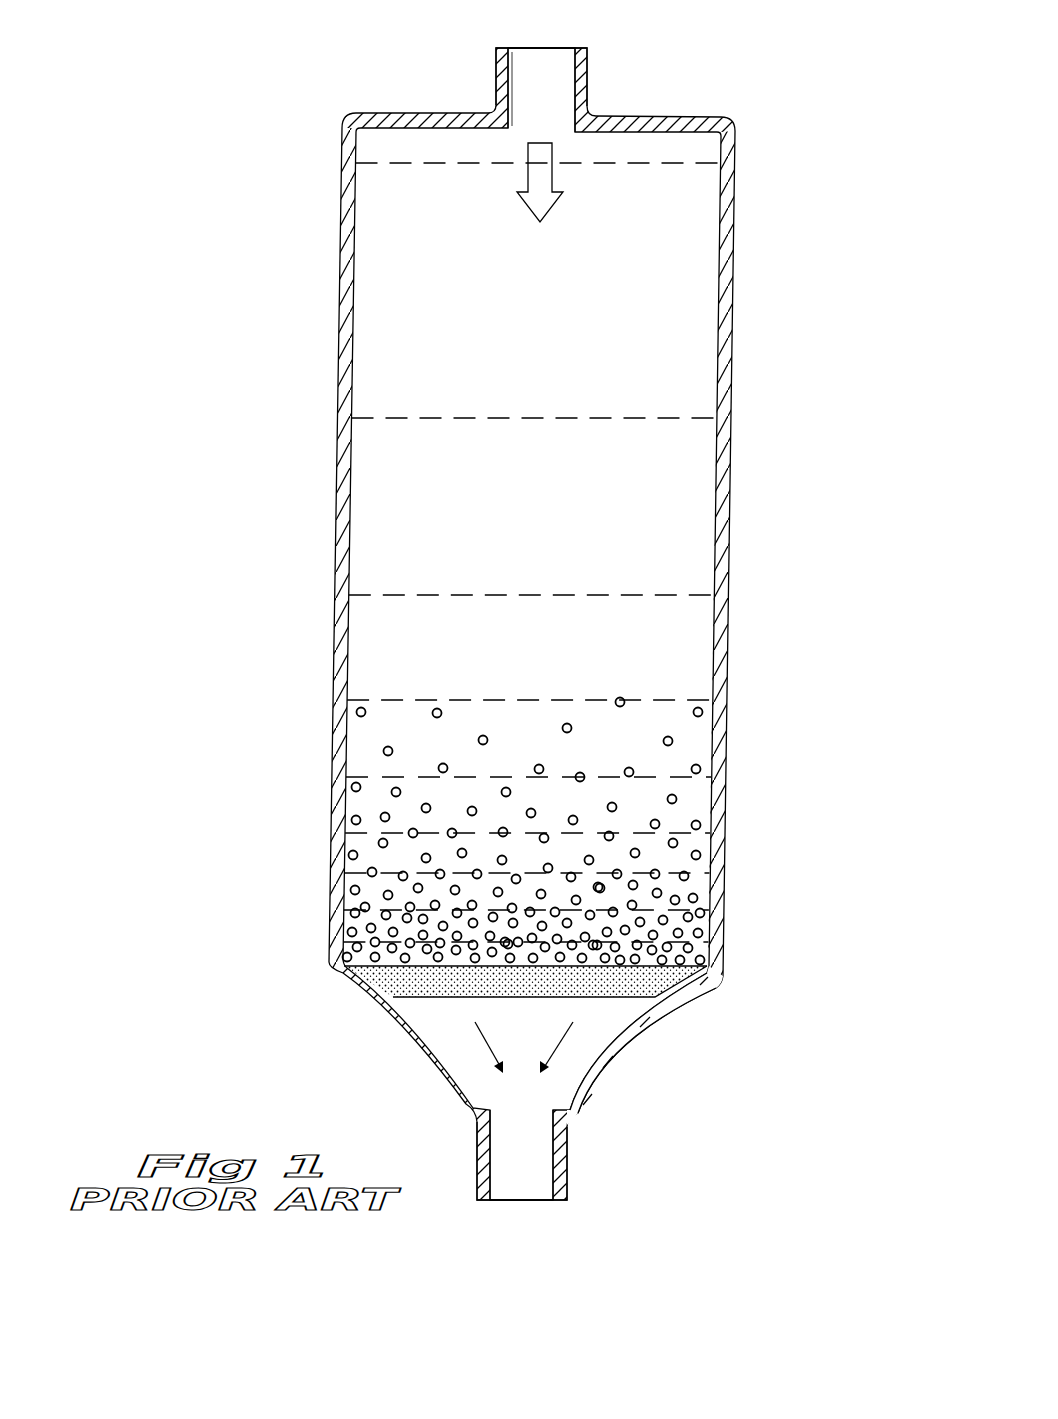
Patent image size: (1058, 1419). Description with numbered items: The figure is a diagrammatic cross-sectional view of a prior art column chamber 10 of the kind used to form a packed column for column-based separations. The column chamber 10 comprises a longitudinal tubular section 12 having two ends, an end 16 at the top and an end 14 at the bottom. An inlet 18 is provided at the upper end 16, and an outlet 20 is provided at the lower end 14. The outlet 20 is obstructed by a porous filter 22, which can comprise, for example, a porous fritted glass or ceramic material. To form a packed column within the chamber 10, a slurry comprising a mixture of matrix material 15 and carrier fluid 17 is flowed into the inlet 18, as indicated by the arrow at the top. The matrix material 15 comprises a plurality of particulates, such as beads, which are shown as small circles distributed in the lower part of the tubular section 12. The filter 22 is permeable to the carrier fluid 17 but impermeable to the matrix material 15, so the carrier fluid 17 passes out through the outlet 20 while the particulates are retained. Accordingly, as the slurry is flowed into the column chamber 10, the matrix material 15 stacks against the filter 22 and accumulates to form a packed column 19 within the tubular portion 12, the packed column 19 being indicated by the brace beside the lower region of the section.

The column chamber 10 is at (830, 158).
The longitudinal tubular section 12 is at (692, 531).
The end 14 is at (657, 1064).
The matrix material 15 is at (664, 738).
The end 16 is at (476, 90).
The carrier fluid 17 is at (385, 360).
The inlet 18 is at (543, 48).
The packed column 19 is at (740, 883).
The outlet 20 is at (522, 1210).
The porous filter 22 is at (390, 978).